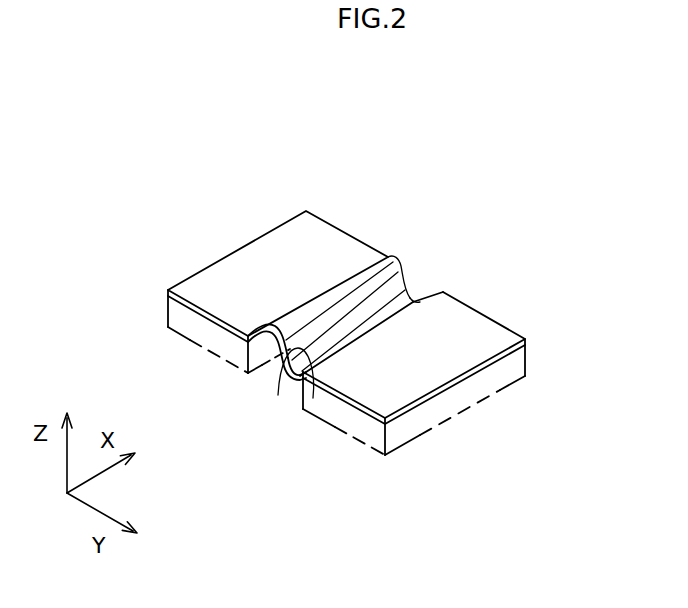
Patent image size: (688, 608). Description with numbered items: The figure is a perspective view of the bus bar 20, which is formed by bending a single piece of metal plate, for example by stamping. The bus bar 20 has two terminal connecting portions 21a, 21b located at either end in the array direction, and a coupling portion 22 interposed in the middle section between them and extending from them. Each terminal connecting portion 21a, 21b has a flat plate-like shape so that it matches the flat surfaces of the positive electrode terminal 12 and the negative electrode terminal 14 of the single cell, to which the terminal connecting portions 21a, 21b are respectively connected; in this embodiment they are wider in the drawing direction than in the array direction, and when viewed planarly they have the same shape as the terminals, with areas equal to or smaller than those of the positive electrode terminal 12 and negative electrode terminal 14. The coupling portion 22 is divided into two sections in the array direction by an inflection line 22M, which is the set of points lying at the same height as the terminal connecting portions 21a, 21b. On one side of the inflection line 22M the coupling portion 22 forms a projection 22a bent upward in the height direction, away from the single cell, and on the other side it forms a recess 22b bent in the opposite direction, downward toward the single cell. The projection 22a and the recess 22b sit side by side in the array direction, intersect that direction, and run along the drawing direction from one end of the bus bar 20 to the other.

The bus bar 20 is at (211, 150).
The negative electrode terminal 14 is at (182, 325).
The positive electrode terminal 12 is at (357, 422).
The coupling portion 22 is at (507, 232).
The terminal connecting portion 21a is at (483, 328).
The terminal connecting portion 21b is at (318, 232).
The projection 22a is at (398, 256).
The recess 22b is at (412, 296).
The inflection line 22M is at (278, 395).